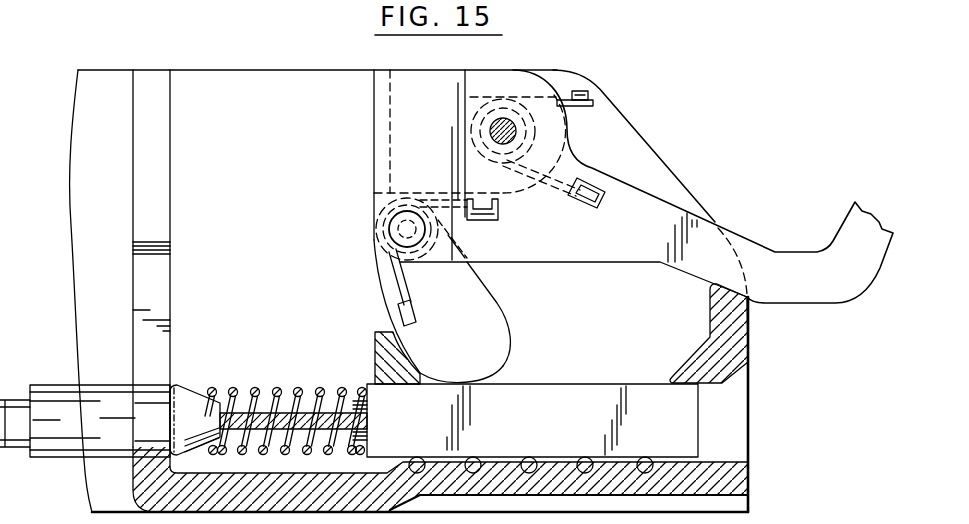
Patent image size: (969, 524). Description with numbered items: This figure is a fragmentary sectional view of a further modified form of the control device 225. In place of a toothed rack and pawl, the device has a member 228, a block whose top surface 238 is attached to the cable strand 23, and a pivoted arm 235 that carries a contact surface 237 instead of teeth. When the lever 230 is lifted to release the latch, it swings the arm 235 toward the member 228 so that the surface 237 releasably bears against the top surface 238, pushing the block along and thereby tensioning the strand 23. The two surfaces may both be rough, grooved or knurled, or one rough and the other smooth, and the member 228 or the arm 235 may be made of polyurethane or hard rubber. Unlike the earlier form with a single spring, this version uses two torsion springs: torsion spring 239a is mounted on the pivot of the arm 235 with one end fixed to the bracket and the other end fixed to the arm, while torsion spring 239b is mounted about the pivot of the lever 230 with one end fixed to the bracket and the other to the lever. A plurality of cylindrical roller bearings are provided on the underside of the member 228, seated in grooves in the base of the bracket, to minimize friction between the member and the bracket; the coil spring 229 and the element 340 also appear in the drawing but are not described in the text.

The cable strand 23 is at (246, 420).
The control device 225 is at (321, 84).
The member 228 is at (575, 436).
The compression spring 229 is at (279, 395).
The lever 230 is at (810, 262).
The arm 235 is at (488, 314).
The surface 237 is at (507, 357).
The top surface 238 is at (623, 380).
The torsion spring 239a is at (398, 286).
The torsion spring 239b is at (562, 95).
The rollers 340 is at (662, 507).